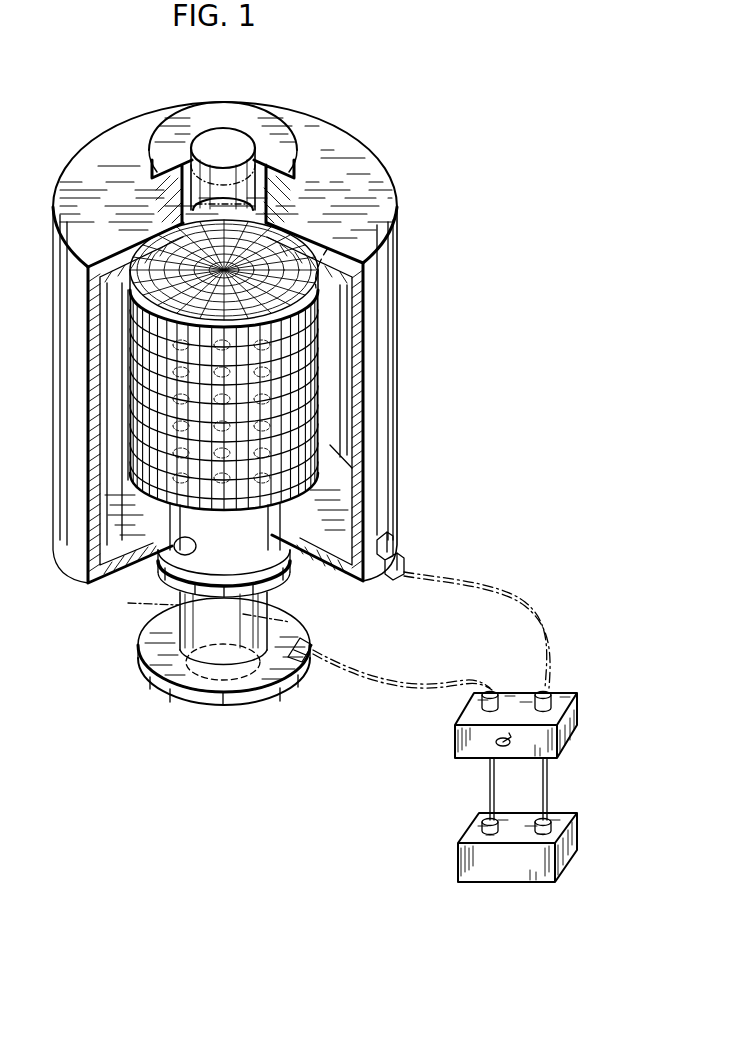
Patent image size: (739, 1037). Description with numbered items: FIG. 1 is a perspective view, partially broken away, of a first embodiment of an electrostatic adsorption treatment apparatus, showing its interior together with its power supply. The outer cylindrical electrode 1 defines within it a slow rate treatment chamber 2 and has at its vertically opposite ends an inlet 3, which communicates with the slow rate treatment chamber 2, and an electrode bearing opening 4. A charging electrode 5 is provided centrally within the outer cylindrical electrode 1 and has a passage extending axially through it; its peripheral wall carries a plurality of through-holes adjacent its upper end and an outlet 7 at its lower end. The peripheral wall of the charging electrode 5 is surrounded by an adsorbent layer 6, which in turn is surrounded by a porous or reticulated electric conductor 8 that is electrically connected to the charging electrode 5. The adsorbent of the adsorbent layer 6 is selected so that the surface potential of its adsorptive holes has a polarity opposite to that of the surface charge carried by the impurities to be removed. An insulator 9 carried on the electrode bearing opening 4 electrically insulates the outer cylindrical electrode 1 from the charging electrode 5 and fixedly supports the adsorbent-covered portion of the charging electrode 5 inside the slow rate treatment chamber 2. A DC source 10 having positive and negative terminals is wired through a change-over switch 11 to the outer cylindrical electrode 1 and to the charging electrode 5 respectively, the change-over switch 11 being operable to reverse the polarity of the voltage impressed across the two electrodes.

The outer cylindrical electrode 1 is at (380, 344).
The slow rate treatment chamber 2 is at (337, 303).
The inlet 3 is at (235, 140).
The electrode bearing opening 4 is at (185, 558).
The charging electrode 5 is at (282, 512).
The adsorbent layer 6 is at (328, 248).
The outlet 7 is at (227, 684).
The porous or reticulated electric conductor 8 is at (317, 417).
The insulator 9 is at (180, 598).
The DC source 10 is at (578, 842).
The change-over switch 11 is at (578, 710).